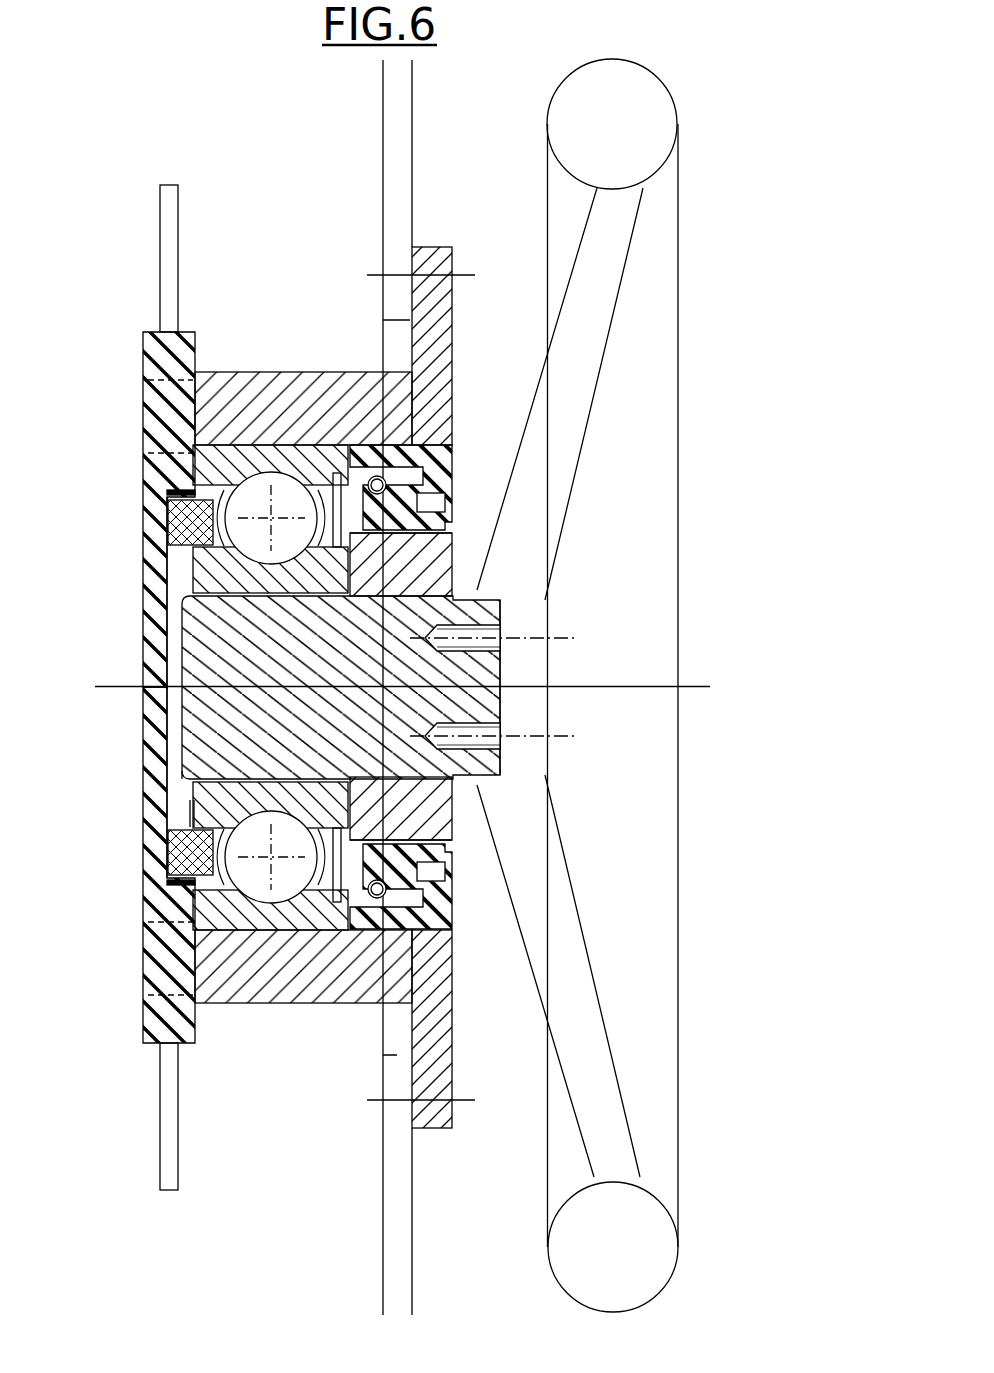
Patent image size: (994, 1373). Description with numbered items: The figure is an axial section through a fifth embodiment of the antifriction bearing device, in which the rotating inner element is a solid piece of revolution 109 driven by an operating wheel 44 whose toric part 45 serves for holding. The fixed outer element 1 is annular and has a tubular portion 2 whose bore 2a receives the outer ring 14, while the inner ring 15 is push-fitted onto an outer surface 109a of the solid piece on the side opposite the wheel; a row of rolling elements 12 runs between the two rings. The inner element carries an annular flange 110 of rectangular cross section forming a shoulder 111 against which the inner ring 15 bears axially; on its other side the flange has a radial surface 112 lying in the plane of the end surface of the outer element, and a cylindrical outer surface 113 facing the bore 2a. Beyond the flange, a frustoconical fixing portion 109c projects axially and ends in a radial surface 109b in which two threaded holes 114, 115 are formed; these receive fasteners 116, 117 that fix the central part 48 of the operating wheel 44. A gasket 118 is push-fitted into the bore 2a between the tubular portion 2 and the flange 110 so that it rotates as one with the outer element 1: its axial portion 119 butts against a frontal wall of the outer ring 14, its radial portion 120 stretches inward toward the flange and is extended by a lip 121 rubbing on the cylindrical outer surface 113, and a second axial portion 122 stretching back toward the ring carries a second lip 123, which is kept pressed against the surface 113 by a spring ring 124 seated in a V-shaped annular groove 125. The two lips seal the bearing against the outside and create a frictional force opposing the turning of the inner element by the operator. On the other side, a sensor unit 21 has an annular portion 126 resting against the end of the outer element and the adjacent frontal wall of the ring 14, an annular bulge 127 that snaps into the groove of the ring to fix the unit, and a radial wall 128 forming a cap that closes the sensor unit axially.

The outer element 1 is at (245, 380).
The tubular portion 2 is at (211, 388).
The bore 2a is at (265, 465).
The rolling elements 12 is at (260, 495).
The outer ring 14 is at (217, 907).
The inner ring 15 is at (222, 803).
The sensor unit 21 is at (145, 470).
The operating wheel 44 is at (558, 88).
The toric part 45 is at (570, 125).
The central part 48 is at (522, 652).
The solid piece of revolution 109 is at (483, 703).
The outer surface 109a is at (198, 783).
The radial surface 109b is at (488, 733).
The frustoconical fixing portion 109c is at (500, 713).
The annular flange 110 is at (452, 574).
The shoulder 111 is at (350, 582).
The radial surface 112 is at (452, 806).
The cylindrical outer surface 113 is at (455, 868).
The threaded hole 114 is at (488, 632).
The threaded hole 115 is at (538, 760).
The fastener 116 is at (560, 640).
The fastener 117 is at (550, 737).
The gasket 118 is at (453, 457).
The axial portion 119 is at (437, 450).
The radial portion 120 is at (452, 470).
The lip 121 is at (452, 528).
The second axial portion 122 is at (452, 495).
The second lip 123 is at (330, 890).
The spring ring 124 is at (377, 898).
The annular groove 125 is at (337, 887).
The annular portion 126 is at (145, 352).
The annular bulge 127 is at (148, 445).
The radial wall 128 is at (150, 597).